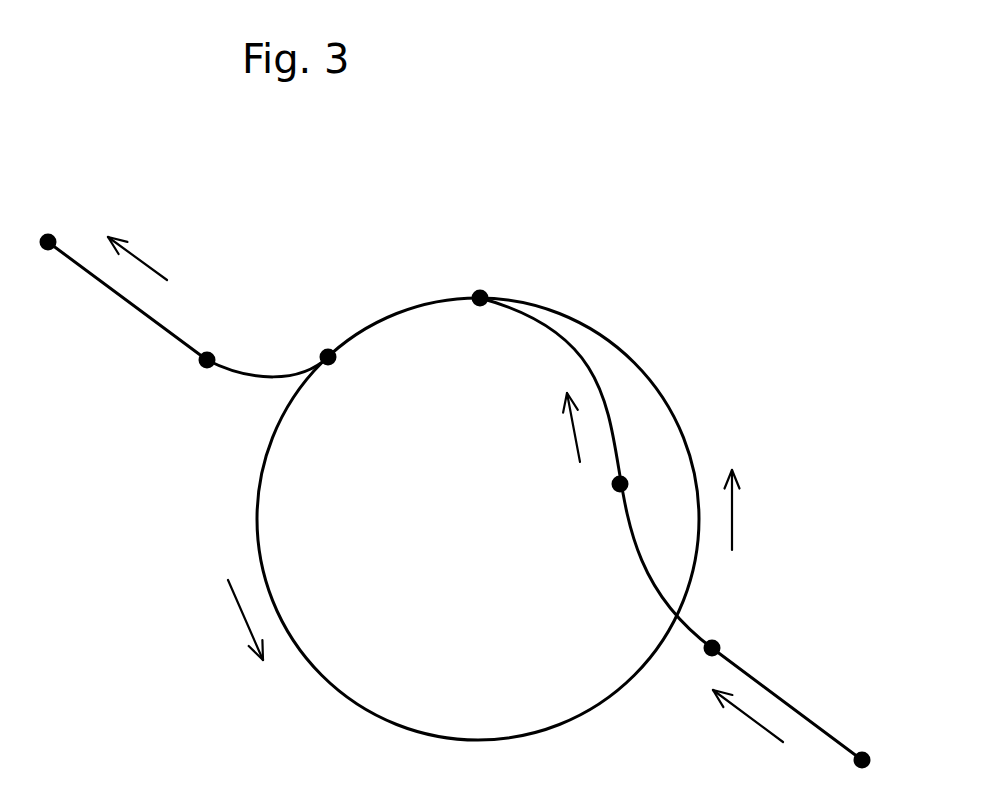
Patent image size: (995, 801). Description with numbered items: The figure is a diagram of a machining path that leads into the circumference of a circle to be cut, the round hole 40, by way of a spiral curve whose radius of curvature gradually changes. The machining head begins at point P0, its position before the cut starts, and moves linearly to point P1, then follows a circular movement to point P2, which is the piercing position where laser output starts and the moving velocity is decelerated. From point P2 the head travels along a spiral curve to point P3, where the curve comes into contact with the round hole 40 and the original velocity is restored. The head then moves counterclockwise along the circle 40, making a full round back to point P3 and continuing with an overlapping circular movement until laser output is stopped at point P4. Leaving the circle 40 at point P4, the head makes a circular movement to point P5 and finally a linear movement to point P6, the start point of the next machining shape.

The round hole 40 is at (647, 372).
The point P0 is at (863, 758).
The point P1 is at (714, 648).
The point P2 is at (618, 486).
The point P3 is at (480, 296).
The point P4 is at (327, 355).
The point P5 is at (207, 358).
The point P6 is at (48, 240).